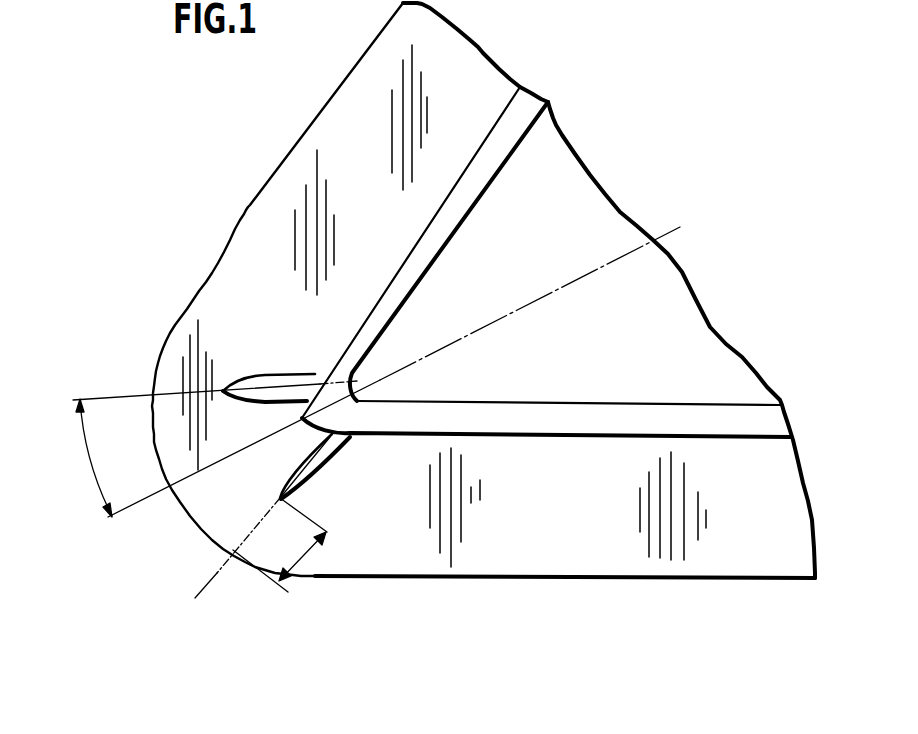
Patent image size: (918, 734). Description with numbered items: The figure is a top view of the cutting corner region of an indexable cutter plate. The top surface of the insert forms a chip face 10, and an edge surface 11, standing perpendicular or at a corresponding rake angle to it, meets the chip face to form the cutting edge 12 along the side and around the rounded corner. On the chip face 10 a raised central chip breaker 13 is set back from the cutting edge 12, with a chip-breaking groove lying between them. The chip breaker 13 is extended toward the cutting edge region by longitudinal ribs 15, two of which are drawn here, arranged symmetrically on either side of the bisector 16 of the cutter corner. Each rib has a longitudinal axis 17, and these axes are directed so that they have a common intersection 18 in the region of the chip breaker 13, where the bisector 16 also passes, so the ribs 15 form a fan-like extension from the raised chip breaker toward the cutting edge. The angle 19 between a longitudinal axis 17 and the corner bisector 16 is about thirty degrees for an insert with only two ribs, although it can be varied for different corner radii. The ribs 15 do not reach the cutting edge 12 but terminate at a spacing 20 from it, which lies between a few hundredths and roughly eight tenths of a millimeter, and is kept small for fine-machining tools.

The chip face 10 is at (777, 505).
The edge surface 11 is at (466, 579).
The cutting edge 12 is at (240, 230).
The chip breaker 13 is at (695, 345).
The longitudinal ribs 15 is at (273, 380).
The bisector of the cutter corner 16 is at (130, 507).
The longitudinal axes 17 is at (112, 397).
The groove bottom 18 is at (378, 382).
The angle 19 is at (90, 462).
The spacing 20 is at (305, 555).